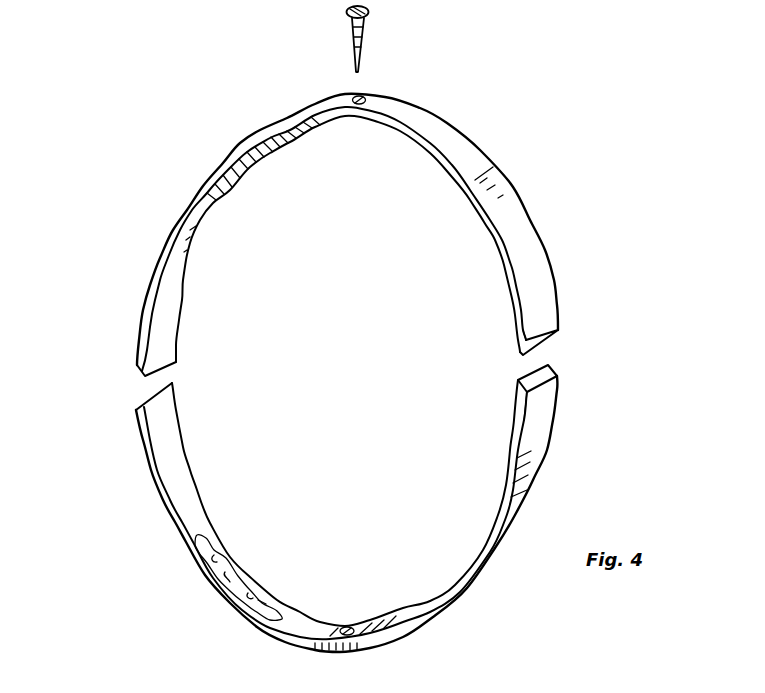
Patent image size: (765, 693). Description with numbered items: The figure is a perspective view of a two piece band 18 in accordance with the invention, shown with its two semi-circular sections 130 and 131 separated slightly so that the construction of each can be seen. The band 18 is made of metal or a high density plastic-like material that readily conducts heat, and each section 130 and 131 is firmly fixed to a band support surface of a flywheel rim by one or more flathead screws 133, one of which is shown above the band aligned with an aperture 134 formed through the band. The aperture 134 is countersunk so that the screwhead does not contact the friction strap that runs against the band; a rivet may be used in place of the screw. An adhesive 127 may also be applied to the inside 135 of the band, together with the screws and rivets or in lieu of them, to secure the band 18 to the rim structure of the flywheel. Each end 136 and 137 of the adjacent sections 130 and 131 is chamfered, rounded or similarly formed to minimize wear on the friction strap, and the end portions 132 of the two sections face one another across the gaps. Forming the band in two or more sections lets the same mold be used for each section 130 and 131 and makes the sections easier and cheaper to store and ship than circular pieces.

The band 18 is at (156, 184).
The adhesive 127 is at (218, 567).
The section 130 is at (532, 188).
The section 131 is at (490, 580).
The end portion 132 is at (540, 303).
The flathead screw 133 is at (350, 48).
The aperture 134 is at (366, 96).
The inside 135 is at (187, 507).
The end 136 is at (553, 350).
The end 137 is at (522, 384).